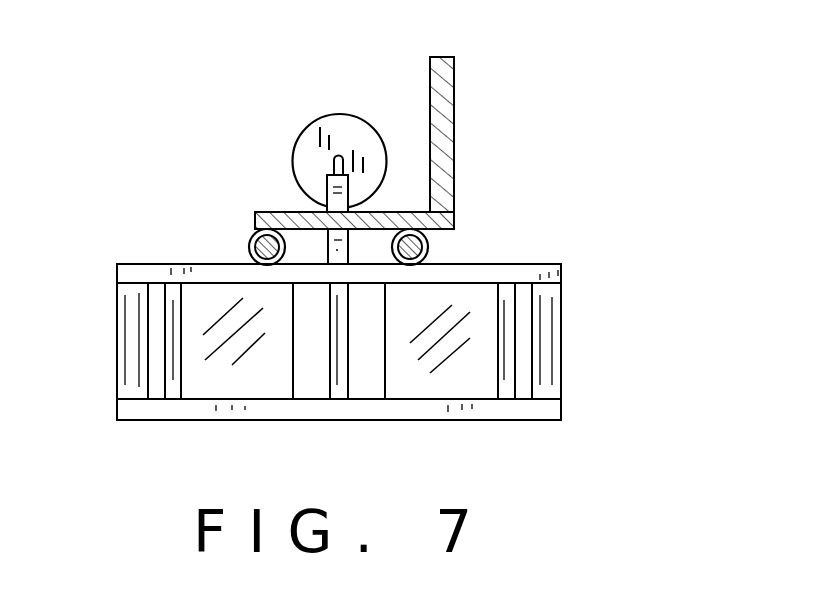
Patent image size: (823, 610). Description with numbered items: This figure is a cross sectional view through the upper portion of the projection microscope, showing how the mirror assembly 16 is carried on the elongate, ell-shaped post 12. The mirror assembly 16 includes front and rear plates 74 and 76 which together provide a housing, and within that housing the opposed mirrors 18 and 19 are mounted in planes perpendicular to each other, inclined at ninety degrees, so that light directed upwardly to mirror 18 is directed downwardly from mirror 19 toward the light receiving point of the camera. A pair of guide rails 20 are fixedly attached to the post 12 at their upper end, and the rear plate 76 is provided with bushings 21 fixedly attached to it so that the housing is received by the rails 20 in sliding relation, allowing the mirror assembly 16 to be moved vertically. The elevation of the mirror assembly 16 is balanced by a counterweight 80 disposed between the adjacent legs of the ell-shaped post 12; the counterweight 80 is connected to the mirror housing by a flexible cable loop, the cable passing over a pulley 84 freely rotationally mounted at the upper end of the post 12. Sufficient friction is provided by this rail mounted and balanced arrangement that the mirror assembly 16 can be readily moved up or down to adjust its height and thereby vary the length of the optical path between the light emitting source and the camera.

The post 12 is at (470, 87).
The mirror assembly 16 is at (350, 370).
The mirror 18 is at (427, 375).
The mirror 19 is at (220, 382).
The guide rails 20 is at (256, 212).
The bushings 21 is at (250, 246).
The front plate 74 is at (537, 422).
The rear plate 76 is at (563, 276).
The counterweight 80 is at (314, 112).
The pulley 84 is at (328, 175).